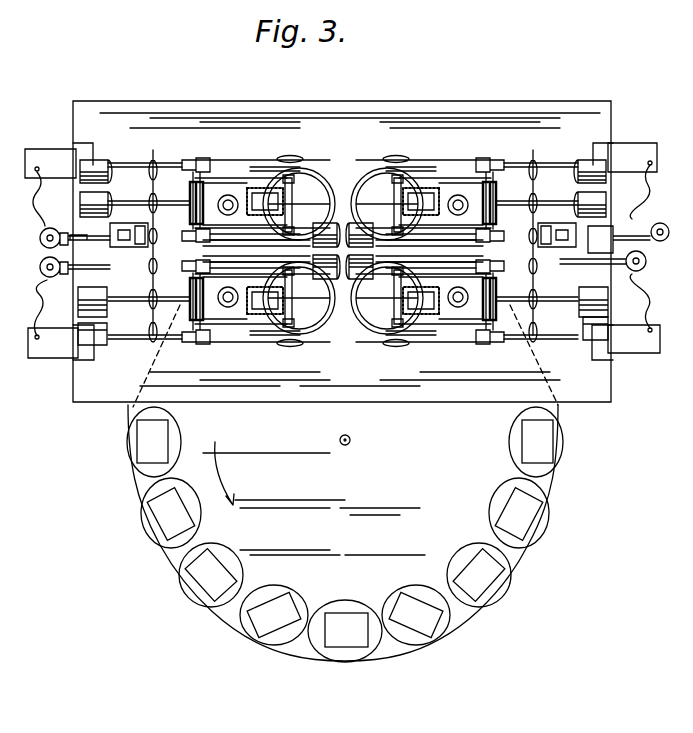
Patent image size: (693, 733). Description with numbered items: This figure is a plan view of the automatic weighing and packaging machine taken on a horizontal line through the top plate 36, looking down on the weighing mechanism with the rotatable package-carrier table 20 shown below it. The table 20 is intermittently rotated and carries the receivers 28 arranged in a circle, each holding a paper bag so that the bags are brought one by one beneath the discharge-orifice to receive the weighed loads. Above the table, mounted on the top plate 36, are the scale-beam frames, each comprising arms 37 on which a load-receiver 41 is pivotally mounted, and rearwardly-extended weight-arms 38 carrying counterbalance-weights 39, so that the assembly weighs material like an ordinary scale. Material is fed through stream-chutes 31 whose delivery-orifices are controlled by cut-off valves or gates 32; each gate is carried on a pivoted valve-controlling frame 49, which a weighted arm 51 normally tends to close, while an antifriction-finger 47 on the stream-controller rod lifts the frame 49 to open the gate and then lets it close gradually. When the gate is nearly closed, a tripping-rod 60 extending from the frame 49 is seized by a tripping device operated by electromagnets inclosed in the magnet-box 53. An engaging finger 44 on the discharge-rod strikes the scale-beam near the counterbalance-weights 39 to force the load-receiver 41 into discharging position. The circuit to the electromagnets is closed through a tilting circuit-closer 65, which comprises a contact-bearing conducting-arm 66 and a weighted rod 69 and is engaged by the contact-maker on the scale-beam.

The package-carrier table 20 is at (234, 617).
The receivers 28 is at (347, 612).
The stream-chutes 31 is at (343, 251).
The cut-off valves or gates 32 is at (290, 207).
The top plate 36 is at (138, 106).
The arms 37 is at (272, 160).
The weight-arms 38 is at (128, 203).
The counterbalance-weights 39 is at (96, 200).
The load-receiver 41 is at (306, 195).
The engaging finger 44 is at (104, 352).
The antifriction-finger 47 is at (150, 253).
The valve-controlling frame 49 is at (207, 197).
The weighted arm 51 is at (235, 236).
The magnet-box 53 is at (38, 156).
The tripping-rod 60 is at (124, 240).
The tilting circuit-closer 65 is at (40, 262).
The conducting-arm 66 is at (637, 200).
The weighted rod 69 is at (663, 224).